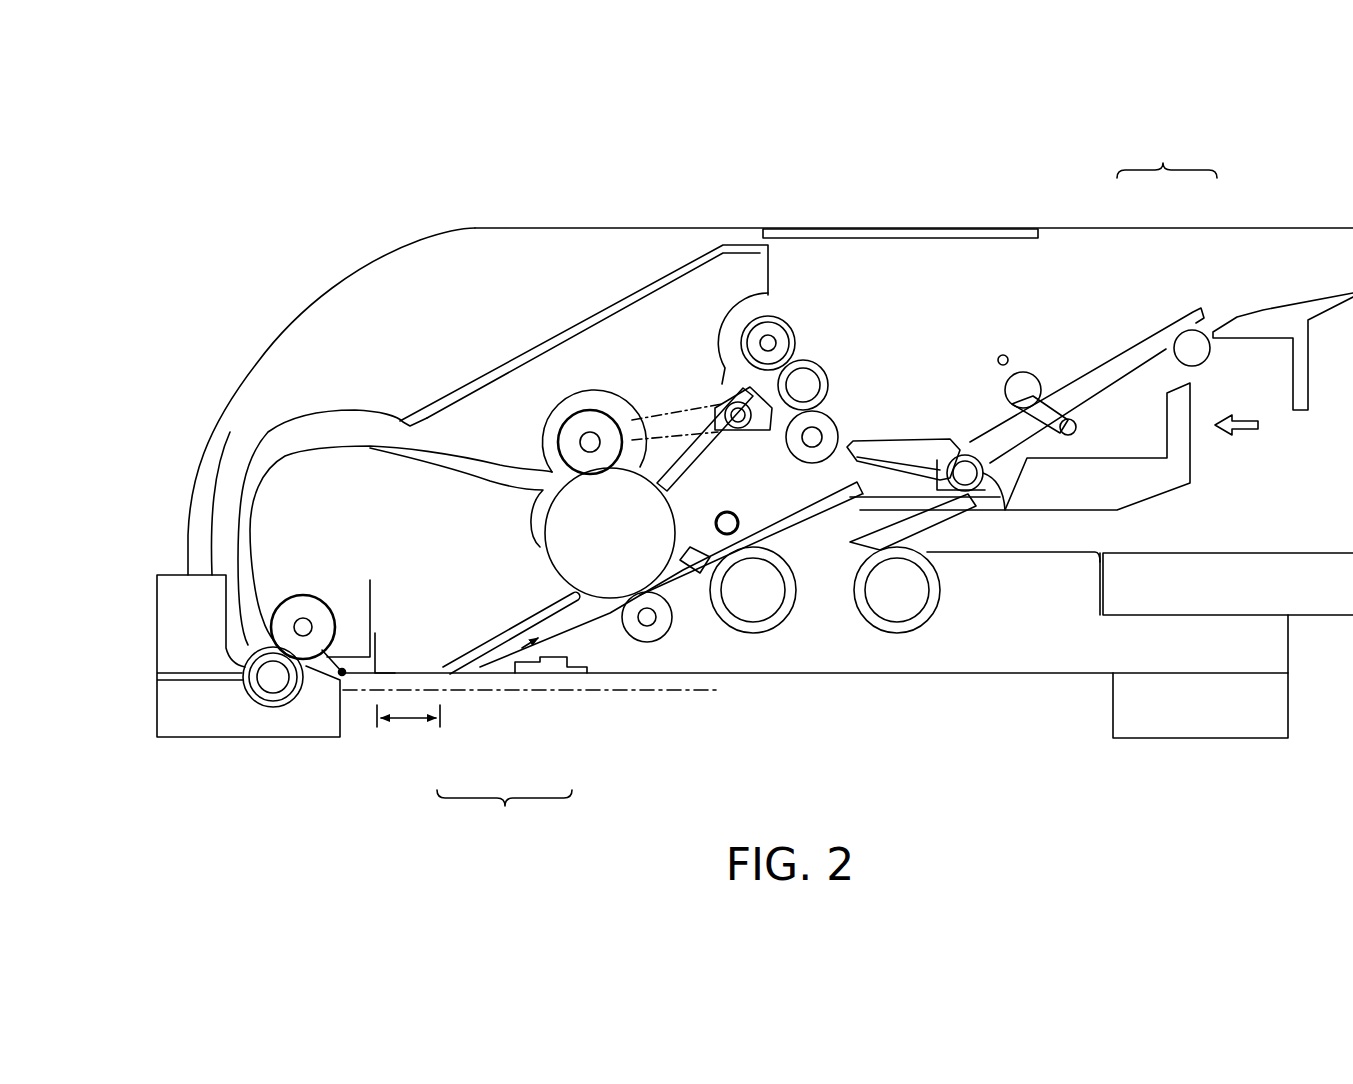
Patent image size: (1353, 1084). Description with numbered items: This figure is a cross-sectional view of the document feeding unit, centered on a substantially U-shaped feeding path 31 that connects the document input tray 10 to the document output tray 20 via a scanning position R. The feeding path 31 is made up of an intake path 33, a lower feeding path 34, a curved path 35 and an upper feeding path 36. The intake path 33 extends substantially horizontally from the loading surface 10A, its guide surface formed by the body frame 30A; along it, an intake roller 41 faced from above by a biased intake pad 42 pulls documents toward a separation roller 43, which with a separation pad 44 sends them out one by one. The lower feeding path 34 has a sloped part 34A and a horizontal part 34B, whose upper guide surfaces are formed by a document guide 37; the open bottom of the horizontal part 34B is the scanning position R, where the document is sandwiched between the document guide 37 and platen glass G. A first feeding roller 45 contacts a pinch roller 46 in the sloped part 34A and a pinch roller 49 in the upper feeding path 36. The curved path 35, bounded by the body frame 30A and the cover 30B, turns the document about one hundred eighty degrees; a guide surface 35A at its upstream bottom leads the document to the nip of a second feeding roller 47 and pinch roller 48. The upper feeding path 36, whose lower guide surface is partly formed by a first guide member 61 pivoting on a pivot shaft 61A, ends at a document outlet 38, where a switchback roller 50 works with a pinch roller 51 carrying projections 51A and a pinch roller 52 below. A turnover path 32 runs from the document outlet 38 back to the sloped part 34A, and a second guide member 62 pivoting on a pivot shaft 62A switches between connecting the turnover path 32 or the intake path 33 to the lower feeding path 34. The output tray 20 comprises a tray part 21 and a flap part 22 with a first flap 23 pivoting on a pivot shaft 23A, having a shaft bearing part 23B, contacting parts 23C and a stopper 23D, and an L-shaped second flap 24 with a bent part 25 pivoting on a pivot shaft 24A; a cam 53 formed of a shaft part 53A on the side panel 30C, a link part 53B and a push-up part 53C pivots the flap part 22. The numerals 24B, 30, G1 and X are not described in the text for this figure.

The document input tray 10 is at (1289, 551).
The loading surface 10A is at (1233, 553).
The document output tray 20 is at (1167, 156).
The tray part 21 is at (1238, 298).
The flap part 22 is at (1150, 322).
The first flap 23 is at (1128, 343).
The pivot shaft 23A is at (1208, 352).
The shaft bearing part 23B is at (995, 510).
The contacting part 23C is at (1117, 360).
The stopper 23D is at (920, 508).
The second flap 24 is at (908, 440).
The pivot shaft 24A is at (960, 487).
The tip portion 24B is at (855, 446).
The bent part 25 is at (960, 440).
The process cartridge 30 is at (205, 268).
The body frame 30A is at (150, 597).
The cover 30B is at (215, 443).
The side panel 30C is at (1297, 228).
The feeding path 31 is at (280, 428).
The turnover path 32 is at (792, 445).
The intake path 33 is at (1115, 527).
The lower feeding path 34 is at (815, 743).
The sloped part 34A is at (513, 678).
The horizontal part 34B is at (463, 680).
The curved path 35 is at (232, 513).
The guide surface 35A is at (335, 630).
The upper feeding path 36 is at (467, 449).
The document guide 37 is at (535, 645).
The document outlet 38 is at (828, 342).
The intake roller 41 is at (913, 627).
The intake pad 42 is at (920, 500).
The separation roller 43 is at (767, 627).
The separation pad 44 is at (745, 449).
The first feeding roller 45 is at (603, 570).
The pinch roller 46 is at (657, 633).
The second feeding roller 47 is at (295, 607).
The pinch roller 48 is at (268, 690).
The pinch roller 49 is at (590, 420).
The switchback roller 50 is at (824, 368).
The pinch roller 51 is at (790, 328).
The projections 51A is at (797, 337).
The pinch roller 52 is at (832, 420).
The cam 53 is at (1020, 358).
The shaft part 53A is at (998, 356).
The link part 53B is at (1047, 406).
The push-up part 53C is at (1076, 433).
The first guide member 61 is at (722, 510).
The pivot shaft 61A is at (660, 563).
The second guide member 62 is at (690, 470).
The pivot shaft 62A is at (731, 518).
The platen glass G is at (580, 693).
The gap point G1 is at (342, 668).
The scanning position R is at (408, 727).
The direction X is at (1247, 427).